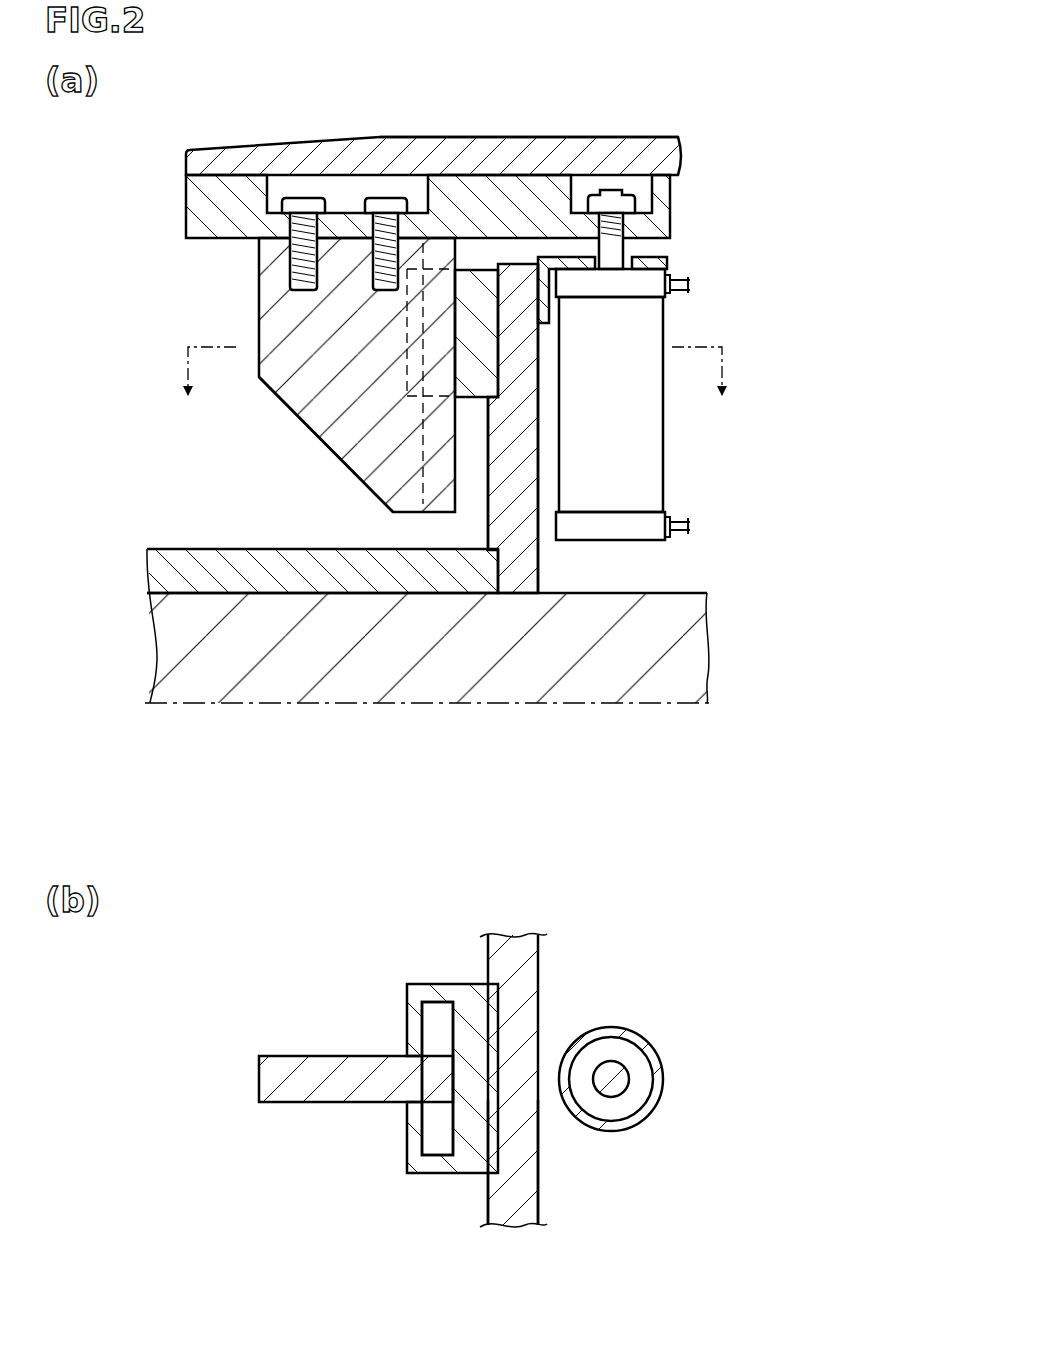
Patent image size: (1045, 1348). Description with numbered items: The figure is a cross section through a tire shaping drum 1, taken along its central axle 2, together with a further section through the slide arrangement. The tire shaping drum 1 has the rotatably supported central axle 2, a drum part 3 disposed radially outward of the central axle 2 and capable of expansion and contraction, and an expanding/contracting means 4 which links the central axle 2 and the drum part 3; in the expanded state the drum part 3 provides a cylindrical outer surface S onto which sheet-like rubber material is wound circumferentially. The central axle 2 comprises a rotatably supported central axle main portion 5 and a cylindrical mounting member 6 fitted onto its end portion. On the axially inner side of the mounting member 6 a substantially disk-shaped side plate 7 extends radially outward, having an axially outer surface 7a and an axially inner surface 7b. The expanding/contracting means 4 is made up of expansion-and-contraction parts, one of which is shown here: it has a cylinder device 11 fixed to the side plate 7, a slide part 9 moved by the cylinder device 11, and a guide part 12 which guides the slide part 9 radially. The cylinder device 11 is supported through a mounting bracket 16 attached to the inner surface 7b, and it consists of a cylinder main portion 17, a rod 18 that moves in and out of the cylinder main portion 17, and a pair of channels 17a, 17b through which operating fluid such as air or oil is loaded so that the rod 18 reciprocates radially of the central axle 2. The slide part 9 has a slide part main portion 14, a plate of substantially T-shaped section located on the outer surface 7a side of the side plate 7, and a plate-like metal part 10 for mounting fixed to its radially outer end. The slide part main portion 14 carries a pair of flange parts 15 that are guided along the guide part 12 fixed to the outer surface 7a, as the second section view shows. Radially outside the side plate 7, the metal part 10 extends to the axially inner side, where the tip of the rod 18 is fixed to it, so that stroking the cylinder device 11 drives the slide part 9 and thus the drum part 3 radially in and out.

The tire shaping drum 1 is at (627, 110).
The central axle 2 is at (160, 803).
The drum part 3 is at (340, 148).
The outer surface S is at (425, 137).
The expanding/contracting means 4 is at (296, 447).
The central axle main portion 5 is at (281, 669).
The mounting member 6 is at (212, 570).
The side plate 7 is at (530, 525).
The axially outer surface 7a is at (486, 510).
The axially inner surface 7b is at (538, 552).
The slide part 9 is at (102, 168).
The metal part for mounting 10 is at (210, 207).
The cylinder device 11 is at (842, 235).
The guide part 12 is at (472, 298).
The slide part main portion 14 is at (290, 300).
The flange part 15 is at (435, 440).
The mounting bracket 16 is at (562, 263).
The cylinder main portion 17 is at (640, 448).
The channel 17a is at (686, 292).
The channel 17b is at (681, 522).
The rod 18 is at (615, 248).